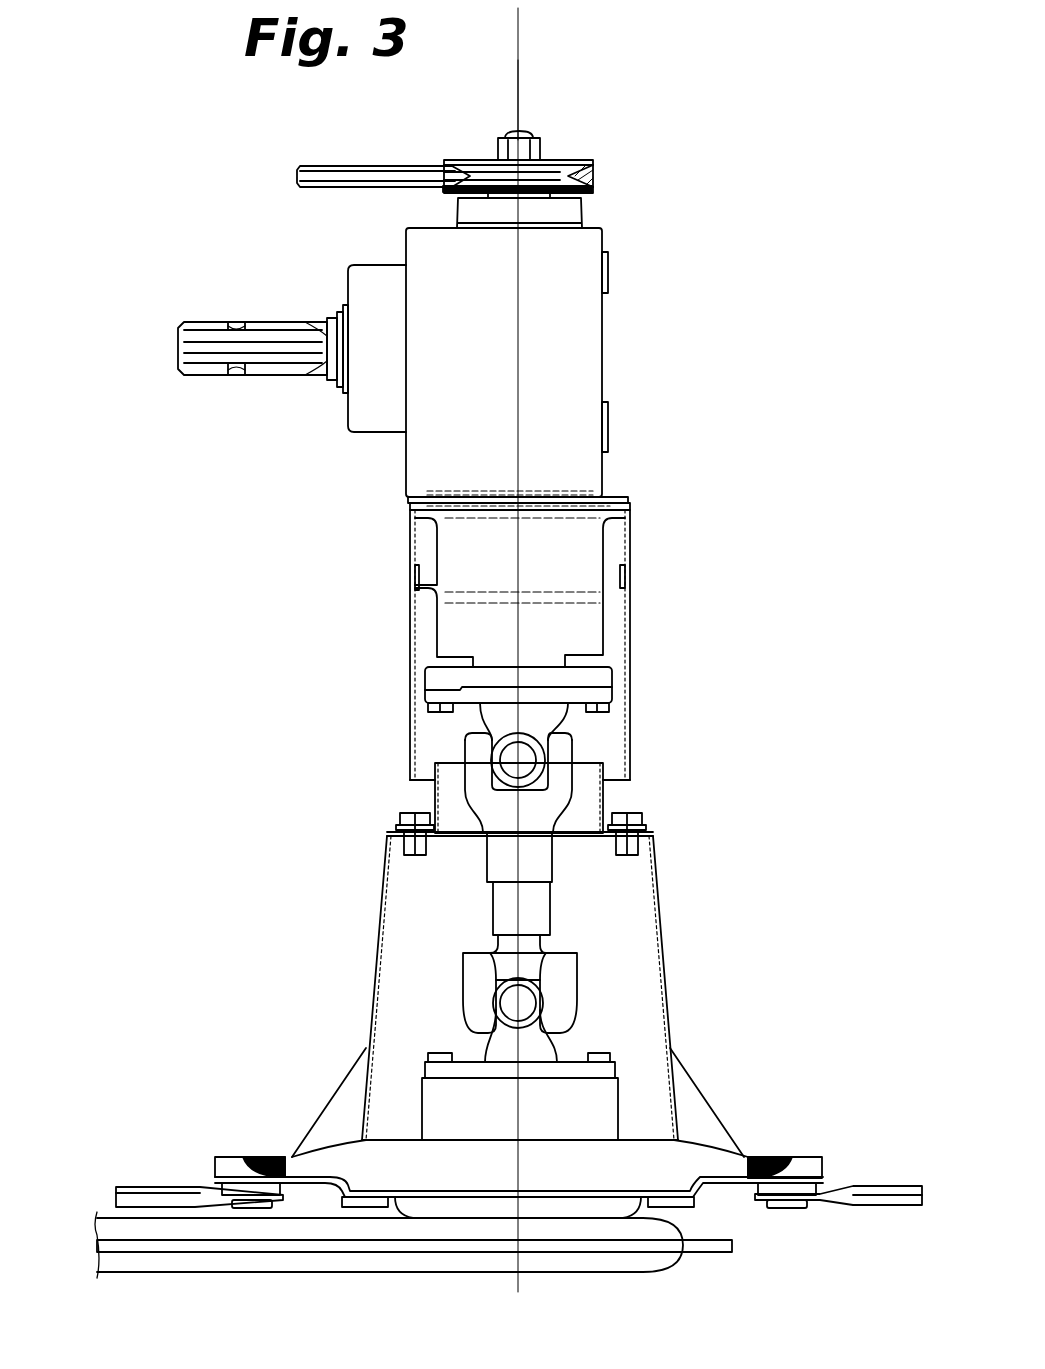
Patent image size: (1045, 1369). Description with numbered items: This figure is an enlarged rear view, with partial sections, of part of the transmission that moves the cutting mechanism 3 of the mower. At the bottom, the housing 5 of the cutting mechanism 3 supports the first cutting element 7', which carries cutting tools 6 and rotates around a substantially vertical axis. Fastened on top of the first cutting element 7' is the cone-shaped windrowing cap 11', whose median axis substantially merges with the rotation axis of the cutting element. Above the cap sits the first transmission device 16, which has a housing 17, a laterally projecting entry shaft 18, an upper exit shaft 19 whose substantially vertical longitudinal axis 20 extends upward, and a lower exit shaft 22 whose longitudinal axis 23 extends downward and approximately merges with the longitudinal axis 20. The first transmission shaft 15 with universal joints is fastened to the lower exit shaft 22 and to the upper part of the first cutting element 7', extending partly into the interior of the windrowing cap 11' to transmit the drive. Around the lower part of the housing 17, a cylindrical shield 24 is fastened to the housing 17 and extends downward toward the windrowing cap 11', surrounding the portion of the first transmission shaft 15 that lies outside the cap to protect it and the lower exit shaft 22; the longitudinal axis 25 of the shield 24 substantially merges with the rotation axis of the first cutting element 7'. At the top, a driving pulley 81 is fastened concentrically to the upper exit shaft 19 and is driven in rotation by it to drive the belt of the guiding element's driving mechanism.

The cutting mechanism 3 is at (227, 1282).
The housing 5 is at (367, 1247).
The cutting tools 6 is at (180, 1195).
The first cutting element 7' is at (518, 1115).
The windrowing cap 11' is at (529, 985).
The first transmission shaft with universal joints 15 is at (503, 897).
The first transmission device 16 is at (677, 567).
The housing 17 is at (573, 418).
The entry shaft 18 is at (222, 360).
The upper exit shaft 19 is at (537, 145).
The longitudinal axis 20 is at (520, 12).
The lower exit shaft 22 is at (483, 683).
The longitudinal axis 23 is at (518, 100).
The cylindrical shield 24 is at (628, 653).
The longitudinal axis 25 is at (518, 1290).
The driving pulley 81 is at (593, 163).